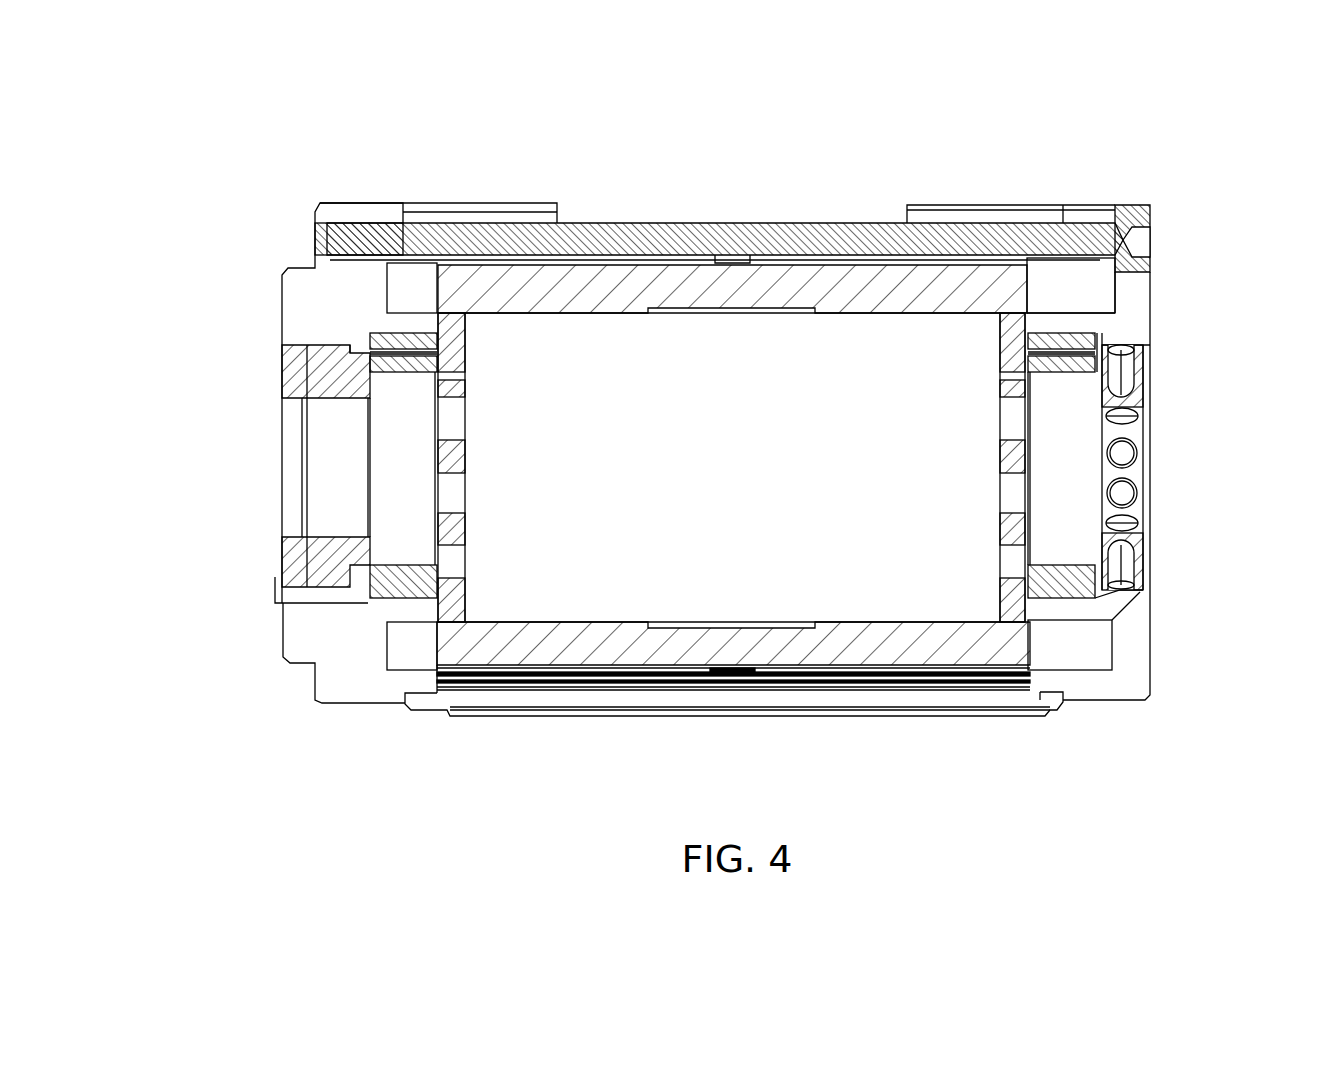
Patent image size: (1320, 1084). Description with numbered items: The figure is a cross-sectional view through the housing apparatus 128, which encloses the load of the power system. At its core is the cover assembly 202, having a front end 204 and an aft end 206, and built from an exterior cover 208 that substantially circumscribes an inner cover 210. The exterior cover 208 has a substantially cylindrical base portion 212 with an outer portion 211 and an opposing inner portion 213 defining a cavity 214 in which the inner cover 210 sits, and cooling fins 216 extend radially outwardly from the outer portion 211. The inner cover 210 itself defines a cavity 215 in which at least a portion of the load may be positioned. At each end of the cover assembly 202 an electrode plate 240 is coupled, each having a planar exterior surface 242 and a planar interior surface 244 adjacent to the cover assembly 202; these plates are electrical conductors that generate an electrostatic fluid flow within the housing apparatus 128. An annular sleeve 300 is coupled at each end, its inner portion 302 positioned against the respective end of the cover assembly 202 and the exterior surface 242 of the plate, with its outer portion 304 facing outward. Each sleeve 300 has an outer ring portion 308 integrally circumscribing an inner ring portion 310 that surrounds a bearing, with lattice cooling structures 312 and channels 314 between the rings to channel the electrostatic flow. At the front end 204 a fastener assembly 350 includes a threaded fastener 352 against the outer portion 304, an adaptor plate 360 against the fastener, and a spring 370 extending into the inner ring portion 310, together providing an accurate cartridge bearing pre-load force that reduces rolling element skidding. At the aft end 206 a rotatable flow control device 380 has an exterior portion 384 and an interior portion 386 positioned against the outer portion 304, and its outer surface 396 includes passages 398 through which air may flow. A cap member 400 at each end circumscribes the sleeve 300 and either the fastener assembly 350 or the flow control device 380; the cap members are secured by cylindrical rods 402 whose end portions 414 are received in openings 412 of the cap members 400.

The housing apparatus 128 is at (1097, 122).
The cover assembly 202 is at (805, 747).
The front end 204 is at (445, 197).
The aft end 206 is at (985, 198).
The exterior cover 208 is at (940, 727).
The inner cover 210 is at (533, 637).
The outer portion 211 is at (1025, 717).
The base portion 212 is at (631, 727).
The inner portion 213 is at (770, 670).
The cavity 214 is at (852, 600).
The cavity 215 is at (600, 547).
The cooling fins 216 is at (923, 208).
The electrode plate 240 is at (463, 302).
The exterior surface 242 is at (407, 342).
The interior surface 244 is at (468, 348).
The annular sleeve 300 is at (371, 329).
The inner portion 302 is at (435, 330).
The outer portion 304 is at (360, 334).
The outer ring portion 308 is at (377, 603).
The inner ring portion 310 is at (400, 553).
The cooling structures 312 is at (400, 378).
The channels 314 is at (315, 255).
The fastener assembly 350 is at (312, 604).
The fastener 352 is at (317, 355).
The adaptor plate 360 is at (281, 352).
The spring 370 is at (375, 462).
The flow control device 380 is at (1152, 465).
The exterior portion 384 is at (1150, 391).
The interior portion 386 is at (1098, 377).
The outer surface 396 is at (1143, 590).
The passages 398 is at (1128, 374).
The cap member 400 is at (322, 195).
The rods 402 is at (741, 222).
The openings 412 is at (401, 222).
The end portion 414 is at (313, 230).